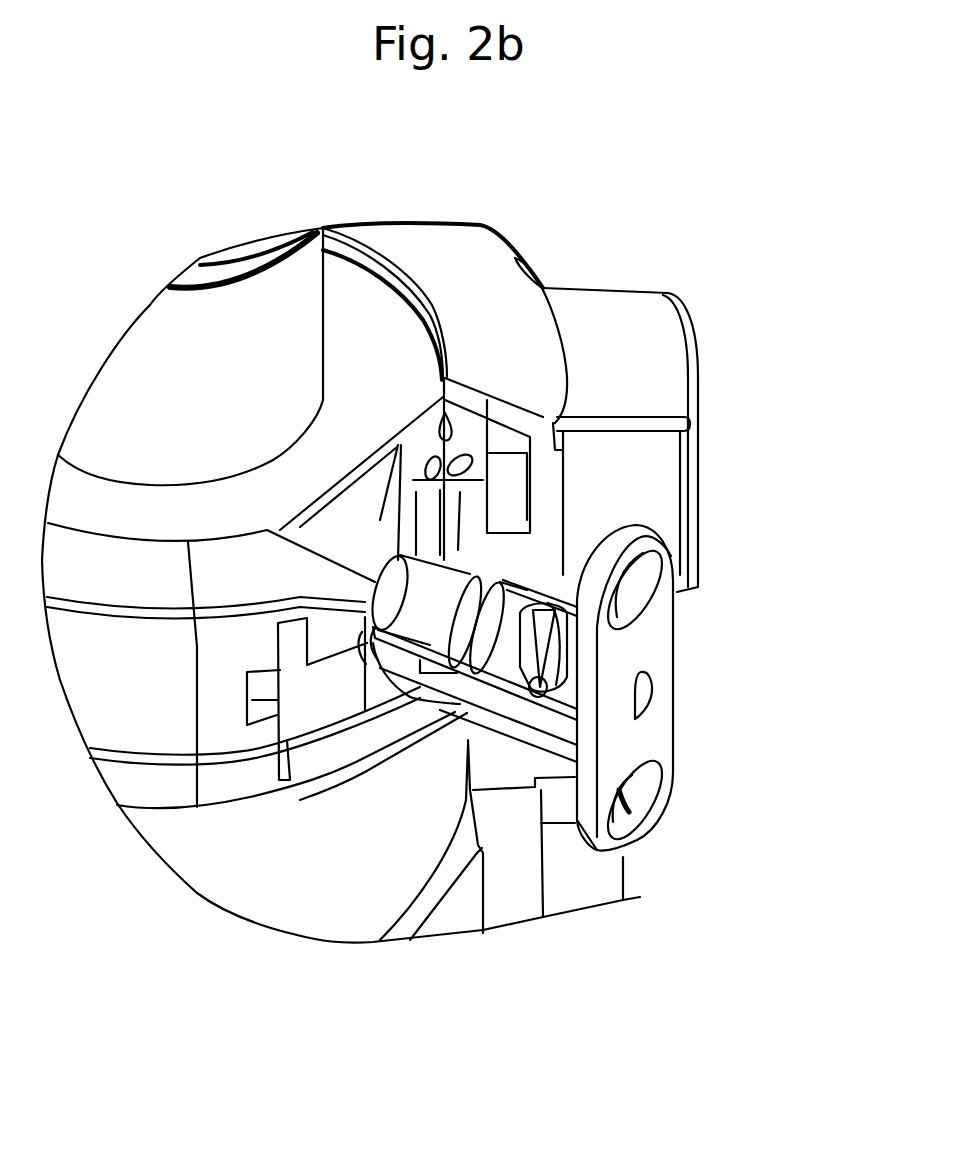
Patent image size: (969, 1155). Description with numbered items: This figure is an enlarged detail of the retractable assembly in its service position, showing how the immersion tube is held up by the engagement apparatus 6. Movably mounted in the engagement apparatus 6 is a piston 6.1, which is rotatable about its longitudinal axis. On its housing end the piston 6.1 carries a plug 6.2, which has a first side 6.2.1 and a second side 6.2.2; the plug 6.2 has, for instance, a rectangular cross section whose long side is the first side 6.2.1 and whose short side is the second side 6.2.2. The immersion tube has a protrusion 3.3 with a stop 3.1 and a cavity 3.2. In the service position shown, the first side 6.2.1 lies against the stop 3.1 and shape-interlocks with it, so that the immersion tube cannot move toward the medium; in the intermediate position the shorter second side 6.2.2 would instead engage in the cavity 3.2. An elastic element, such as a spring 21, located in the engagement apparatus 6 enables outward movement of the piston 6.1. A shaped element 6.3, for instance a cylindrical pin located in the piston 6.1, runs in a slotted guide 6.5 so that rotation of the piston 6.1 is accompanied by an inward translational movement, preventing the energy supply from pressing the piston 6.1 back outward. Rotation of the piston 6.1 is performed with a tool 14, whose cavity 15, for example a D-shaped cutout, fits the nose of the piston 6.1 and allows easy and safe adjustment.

The stop 3.1 is at (399, 480).
The cavity 3.2 is at (403, 542).
The protrusion 3.3 is at (364, 514).
The engagement apparatus 6 is at (660, 526).
The piston 6.1 is at (448, 620).
The plug 6.2 is at (377, 568).
The first side 6.2.1 is at (380, 582).
The second side 6.2.2 is at (305, 630).
The shaped element 6.3 is at (553, 640).
The slotted guide 6.5 is at (547, 628).
The tool 14 is at (660, 750).
The cavity 15 is at (645, 690).
The spring 21 is at (360, 652).